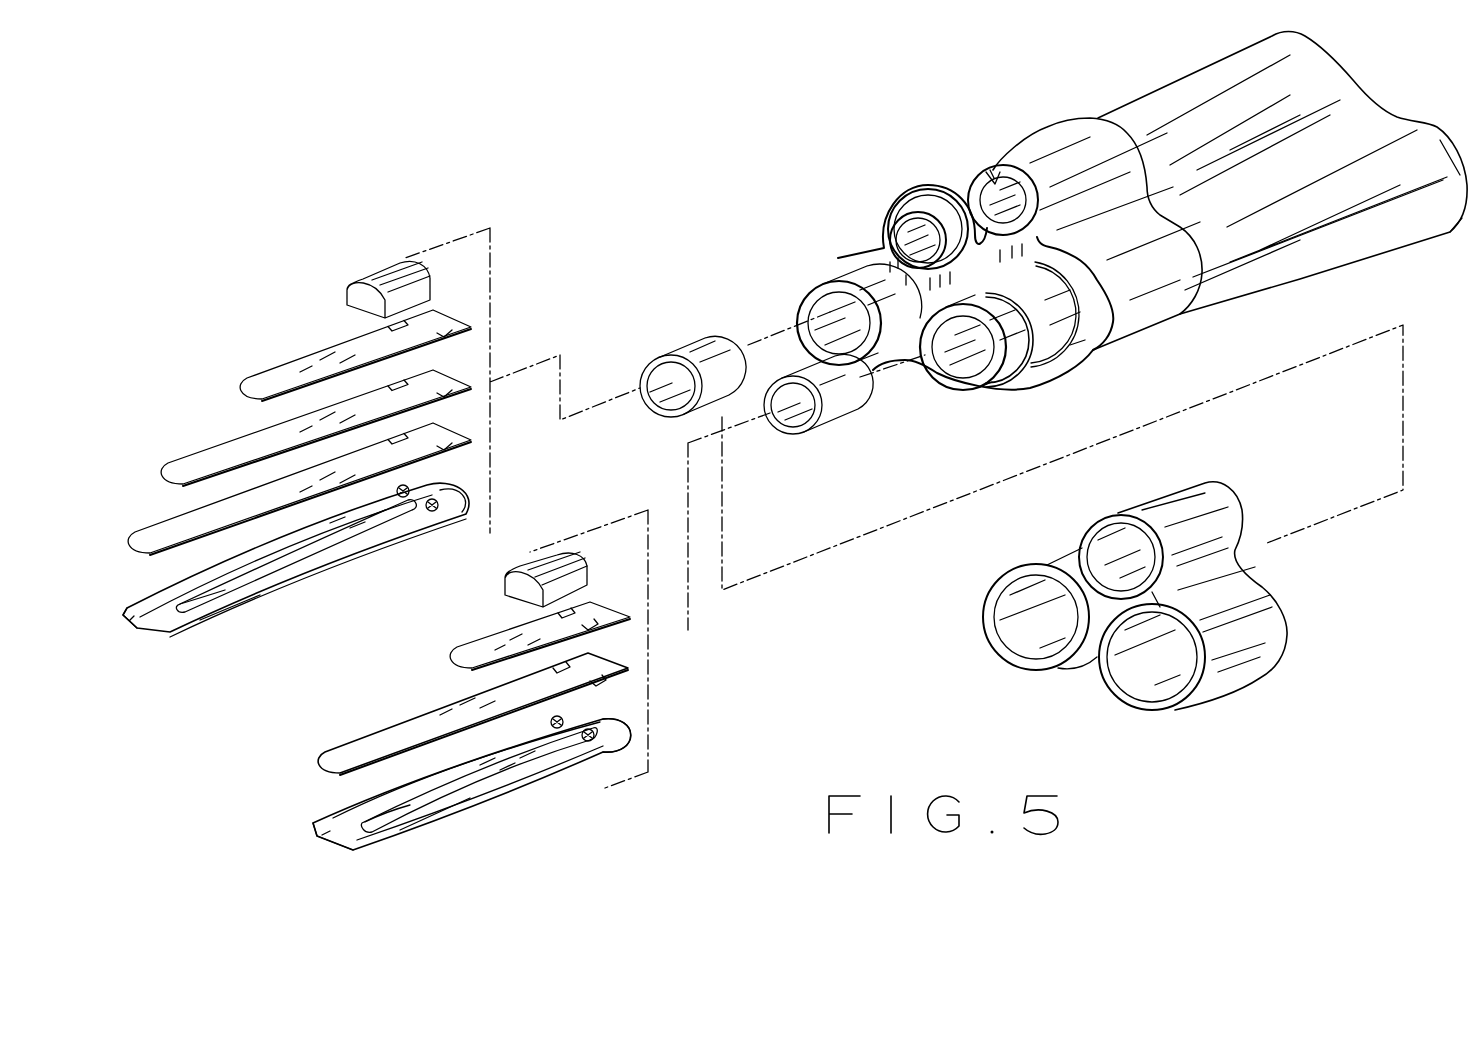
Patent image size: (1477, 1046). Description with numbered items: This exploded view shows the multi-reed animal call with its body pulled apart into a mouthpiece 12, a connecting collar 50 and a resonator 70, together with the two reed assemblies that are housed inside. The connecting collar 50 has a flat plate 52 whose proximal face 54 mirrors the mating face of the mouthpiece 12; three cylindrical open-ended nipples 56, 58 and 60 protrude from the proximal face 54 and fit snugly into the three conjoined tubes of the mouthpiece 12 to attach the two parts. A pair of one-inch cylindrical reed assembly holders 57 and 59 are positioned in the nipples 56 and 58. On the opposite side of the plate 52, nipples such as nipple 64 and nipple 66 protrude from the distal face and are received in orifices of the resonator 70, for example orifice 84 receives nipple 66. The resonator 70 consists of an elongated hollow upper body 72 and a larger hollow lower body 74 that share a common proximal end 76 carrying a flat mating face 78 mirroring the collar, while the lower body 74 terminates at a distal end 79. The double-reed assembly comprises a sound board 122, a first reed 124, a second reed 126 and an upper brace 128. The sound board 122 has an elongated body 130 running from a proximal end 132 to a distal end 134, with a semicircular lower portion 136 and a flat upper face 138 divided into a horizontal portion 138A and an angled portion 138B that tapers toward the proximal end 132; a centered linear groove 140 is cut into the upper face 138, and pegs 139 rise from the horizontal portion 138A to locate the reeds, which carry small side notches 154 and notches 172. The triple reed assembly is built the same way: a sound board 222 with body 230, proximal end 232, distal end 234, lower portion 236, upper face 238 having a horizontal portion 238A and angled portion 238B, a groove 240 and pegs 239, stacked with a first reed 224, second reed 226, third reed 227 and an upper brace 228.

The mouthpiece 12 is at (1180, 507).
The connecting collar 50 is at (873, 250).
The plate 52 is at (1062, 350).
The proximal face 54 is at (942, 198).
The nipple 56 is at (855, 267).
The reed assembly holder 57 is at (706, 340).
The nipple 58 is at (1015, 357).
The reed assembly holder 59 is at (842, 398).
The nipple 60 is at (920, 207).
The nipple 64 is at (1032, 332).
The nipple 66 is at (968, 188).
The resonator 70 is at (1398, 168).
The upper body 72 is at (1097, 147).
The lower body 74 is at (1465, 175).
The proximal end 76 is at (1098, 350).
The mating face 78 is at (1197, 173).
The distal end 79 is at (1460, 224).
The orifice 84 is at (994, 176).
The sound board 122 is at (481, 725).
The first reed 124 is at (362, 720).
The second reed 126 is at (510, 601).
The upper brace 128 is at (503, 567).
The body 130 is at (517, 783).
The proximal end 132 is at (330, 822).
The distal end 134 is at (630, 732).
The lower portion 136 is at (405, 886).
The upper face 138 is at (557, 747).
The horizontal portion 138A is at (612, 736).
The angled portion 138B is at (387, 797).
The pegs 139 is at (592, 730).
The groove 140 is at (380, 797).
The notches 154 is at (588, 682).
The notches 172 is at (593, 624).
The sound board 222 is at (341, 457).
The first reed 224 is at (180, 532).
The second reed 226 is at (220, 465).
The third reed 227 is at (295, 377).
The upper brace 228 is at (382, 292).
The body 230 is at (357, 550).
The proximal end 232 is at (127, 622).
The distal end 234 is at (470, 515).
The lower portion 236 is at (310, 567).
The upper face 238 is at (395, 518).
The horizontal portion 238A is at (440, 508).
The angled portion 238B is at (225, 562).
The pegs 239 is at (412, 488).
The groove 240 is at (210, 590).